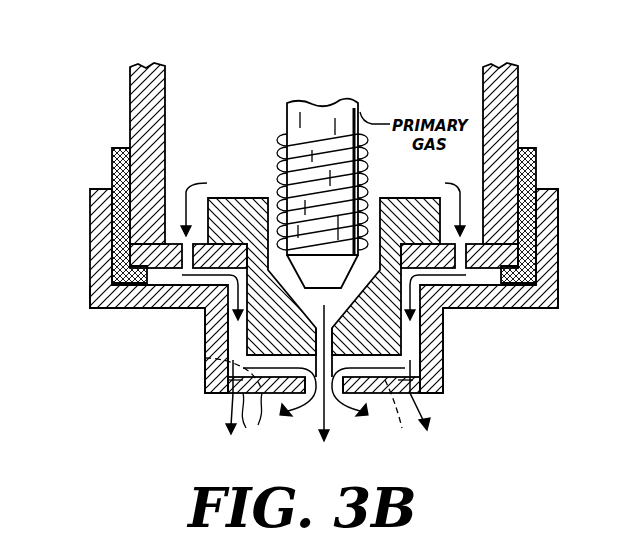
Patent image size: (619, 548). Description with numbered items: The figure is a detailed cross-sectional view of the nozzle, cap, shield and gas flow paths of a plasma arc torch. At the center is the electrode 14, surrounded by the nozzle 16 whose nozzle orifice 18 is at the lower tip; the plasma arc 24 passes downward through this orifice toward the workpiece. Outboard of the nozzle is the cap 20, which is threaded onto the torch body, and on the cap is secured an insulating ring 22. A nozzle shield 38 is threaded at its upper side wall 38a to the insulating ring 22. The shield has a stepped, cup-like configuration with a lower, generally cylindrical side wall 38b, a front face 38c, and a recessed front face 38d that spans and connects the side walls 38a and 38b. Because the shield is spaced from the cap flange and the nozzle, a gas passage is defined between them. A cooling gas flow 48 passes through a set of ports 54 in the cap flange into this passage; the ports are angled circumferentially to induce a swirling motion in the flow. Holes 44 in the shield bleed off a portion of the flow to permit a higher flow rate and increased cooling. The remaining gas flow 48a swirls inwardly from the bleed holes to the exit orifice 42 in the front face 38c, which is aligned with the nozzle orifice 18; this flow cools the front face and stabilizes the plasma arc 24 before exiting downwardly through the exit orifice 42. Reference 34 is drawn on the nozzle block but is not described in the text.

The electrode 14 is at (289, 110).
The nozzle 16 is at (405, 197).
The nozzle orifice 18 is at (329, 326).
The cap 20 is at (517, 112).
The insulating ring 22 is at (536, 158).
The plasma arc 24 is at (329, 430).
The nozzle 34 is at (270, 198).
The nozzle shield 38 is at (545, 322).
The upper side wall 38a is at (558, 200).
The lower side wall 38b is at (443, 362).
The front face 38c is at (260, 398).
The recessed front face 38d is at (503, 310).
The exit orifice 42 is at (324, 392).
The holes 44 is at (453, 411).
The gas flow 48 is at (323, 240).
The remaining gas flow 48a is at (298, 405).
The ports 54 is at (133, 247).